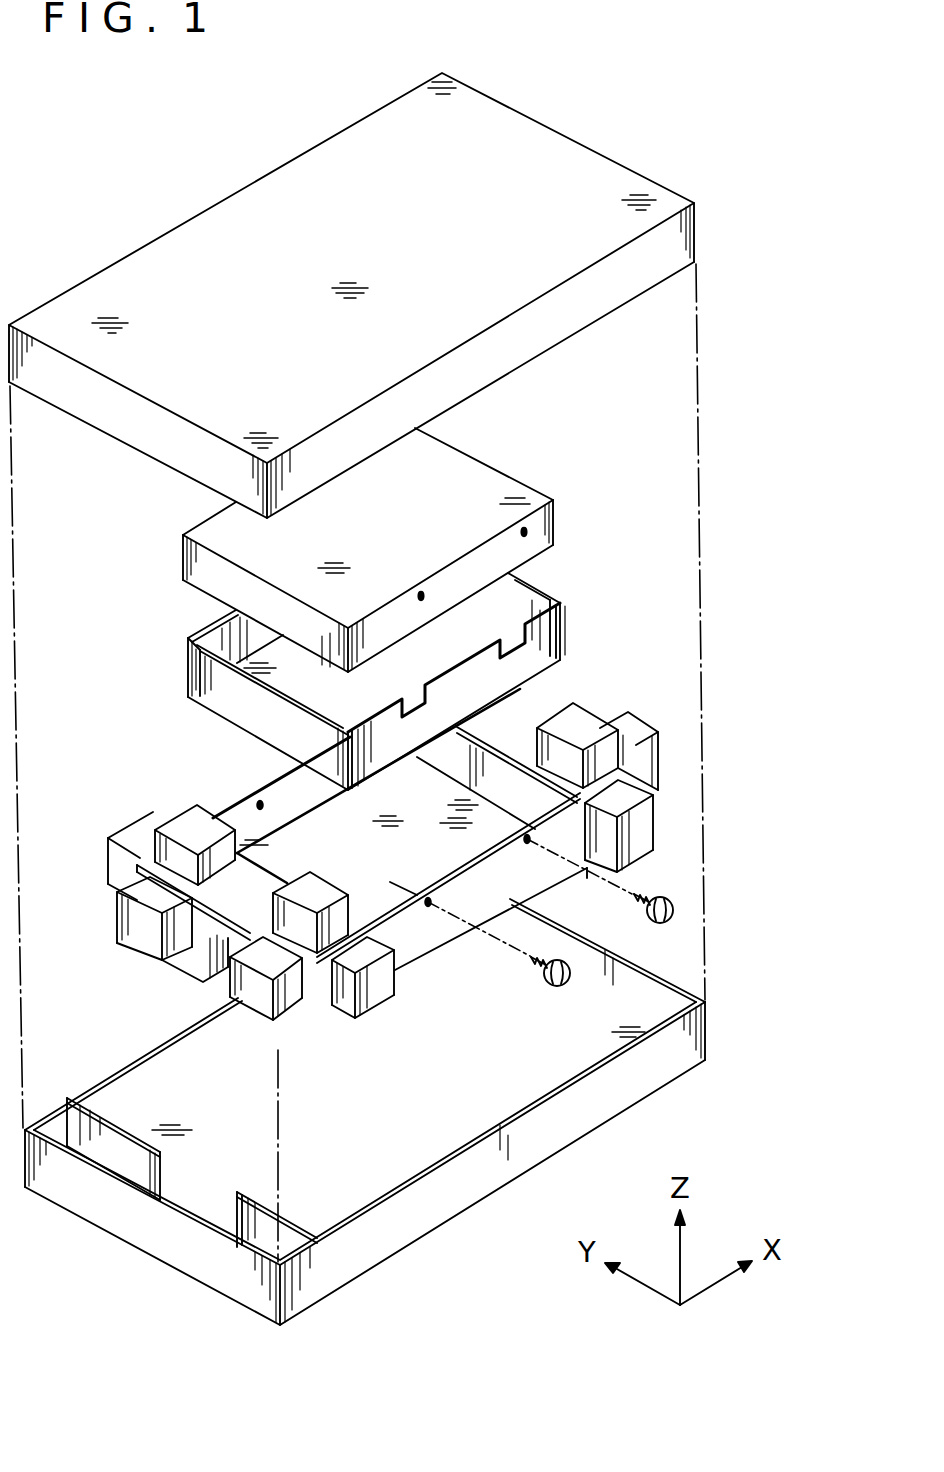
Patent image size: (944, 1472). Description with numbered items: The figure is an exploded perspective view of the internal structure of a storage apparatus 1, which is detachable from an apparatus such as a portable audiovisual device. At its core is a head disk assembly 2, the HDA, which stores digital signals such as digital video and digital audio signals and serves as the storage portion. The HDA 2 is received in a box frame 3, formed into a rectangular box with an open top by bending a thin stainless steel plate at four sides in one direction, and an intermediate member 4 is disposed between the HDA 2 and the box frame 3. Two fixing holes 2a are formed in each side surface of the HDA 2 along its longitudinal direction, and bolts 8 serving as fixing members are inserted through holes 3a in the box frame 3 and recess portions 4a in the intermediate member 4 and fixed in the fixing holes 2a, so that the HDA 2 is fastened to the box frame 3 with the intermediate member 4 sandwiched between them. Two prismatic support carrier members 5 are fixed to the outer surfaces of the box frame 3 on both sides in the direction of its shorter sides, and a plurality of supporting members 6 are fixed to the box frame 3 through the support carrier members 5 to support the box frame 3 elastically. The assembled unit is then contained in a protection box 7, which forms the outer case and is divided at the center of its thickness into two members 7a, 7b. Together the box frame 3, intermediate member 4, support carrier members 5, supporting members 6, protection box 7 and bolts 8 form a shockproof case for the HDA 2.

The storage apparatus 1 is at (712, 541).
The head disk assembly 2 is at (398, 550).
The fixing holes 2a is at (530, 530).
The box frame 3 is at (400, 853).
The holes 3a is at (263, 805).
The intermediate member 4 is at (399, 681).
The recess portions 4a is at (508, 647).
The support carrier members 5 is at (530, 708).
The supporting members 6 is at (585, 712).
The protection box 7 is at (392, 699).
The member of protection box 7a is at (697, 234).
The member of protection box 7b is at (707, 1045).
The bolts 8 is at (548, 987).